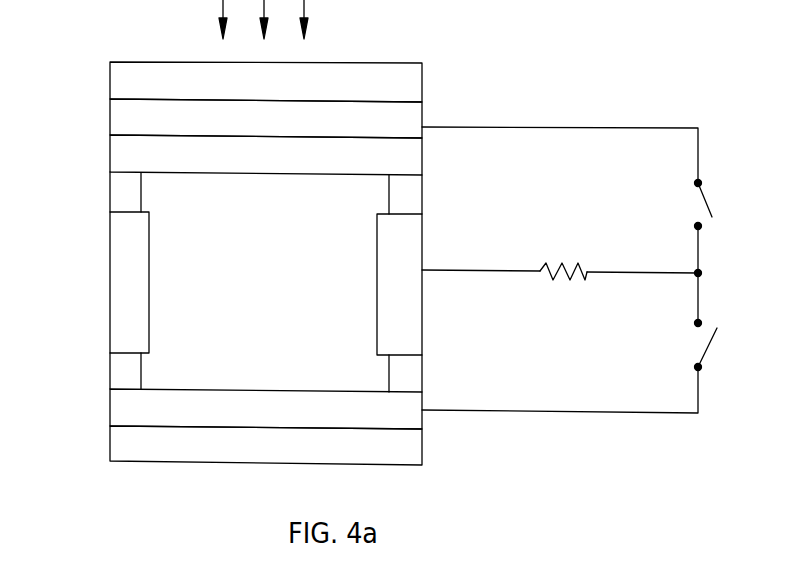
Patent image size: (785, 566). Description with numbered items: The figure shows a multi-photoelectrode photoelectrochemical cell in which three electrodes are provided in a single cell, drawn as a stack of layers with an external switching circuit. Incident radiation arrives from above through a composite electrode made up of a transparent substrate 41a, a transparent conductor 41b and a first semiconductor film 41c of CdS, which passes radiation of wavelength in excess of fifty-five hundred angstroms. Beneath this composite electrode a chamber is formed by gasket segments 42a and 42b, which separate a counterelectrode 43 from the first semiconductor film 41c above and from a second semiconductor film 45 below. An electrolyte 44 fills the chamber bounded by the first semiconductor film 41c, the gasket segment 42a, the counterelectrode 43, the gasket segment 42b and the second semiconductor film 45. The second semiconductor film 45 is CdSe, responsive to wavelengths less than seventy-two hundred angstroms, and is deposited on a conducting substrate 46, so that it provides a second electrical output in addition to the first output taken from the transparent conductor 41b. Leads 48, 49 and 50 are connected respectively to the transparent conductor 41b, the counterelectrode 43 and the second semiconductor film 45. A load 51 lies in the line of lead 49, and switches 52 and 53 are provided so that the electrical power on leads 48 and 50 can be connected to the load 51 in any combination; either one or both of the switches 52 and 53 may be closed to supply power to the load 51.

The transparent substrate 41a is at (110, 80).
The transparent conductor 41b is at (110, 122).
The first semiconductor film 41c is at (110, 150).
The gasket segment 42a is at (110, 193).
The gasket segment 42b is at (110, 367).
The counterelectrode 43 is at (110, 262).
The electrolyte 44 is at (200, 282).
The second semiconductor film 45 is at (110, 408).
The conducting substrate 46 is at (110, 447).
The lead 48 is at (480, 127).
The lead 49 is at (471, 270).
The lead 50 is at (522, 412).
The load 51 is at (567, 277).
The switch 52 is at (708, 198).
The switch 53 is at (715, 343).